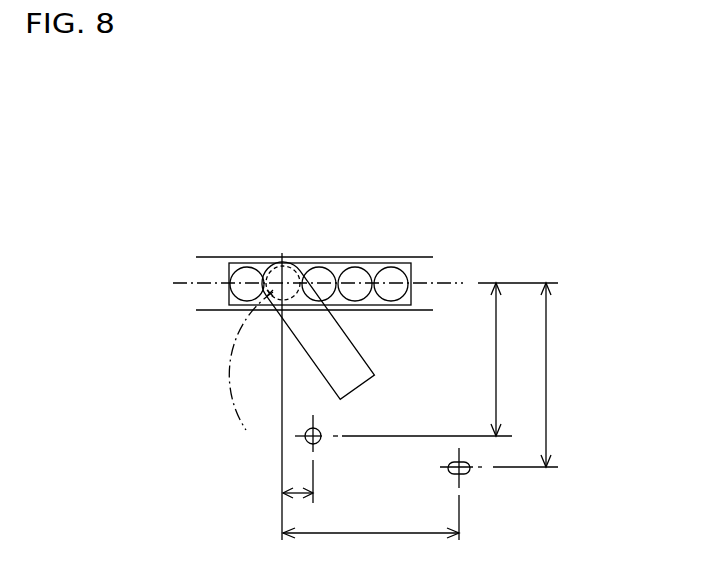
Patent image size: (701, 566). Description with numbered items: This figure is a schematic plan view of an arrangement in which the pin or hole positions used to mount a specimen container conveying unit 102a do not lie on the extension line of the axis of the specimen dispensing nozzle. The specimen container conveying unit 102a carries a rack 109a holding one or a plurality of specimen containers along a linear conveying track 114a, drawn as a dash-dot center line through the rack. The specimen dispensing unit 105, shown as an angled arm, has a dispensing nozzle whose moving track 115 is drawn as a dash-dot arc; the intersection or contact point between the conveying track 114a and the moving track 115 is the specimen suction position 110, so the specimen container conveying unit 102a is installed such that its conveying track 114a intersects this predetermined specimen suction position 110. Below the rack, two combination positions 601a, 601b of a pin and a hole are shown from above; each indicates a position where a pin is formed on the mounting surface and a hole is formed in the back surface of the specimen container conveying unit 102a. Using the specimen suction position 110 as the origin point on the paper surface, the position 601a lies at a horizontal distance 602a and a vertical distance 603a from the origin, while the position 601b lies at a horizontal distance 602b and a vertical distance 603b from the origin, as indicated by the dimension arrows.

The specimen container conveying unit 102a is at (412, 257).
The rack 109a is at (253, 262).
The specimen suction position 110 is at (280, 283).
The conveying track 114a is at (182, 282).
The moving track of the dispensing nozzle 115 is at (228, 385).
The specimen dispensing unit 105 is at (328, 335).
The combination position of the pin and the hole 601a is at (303, 428).
The combination position of the pin and the hole 601b is at (463, 475).
The horizontal distance 602a is at (283, 490).
The horizontal distance 602b is at (283, 530).
The vertical distance 603a is at (497, 343).
The vertical distance 603b is at (545, 397).